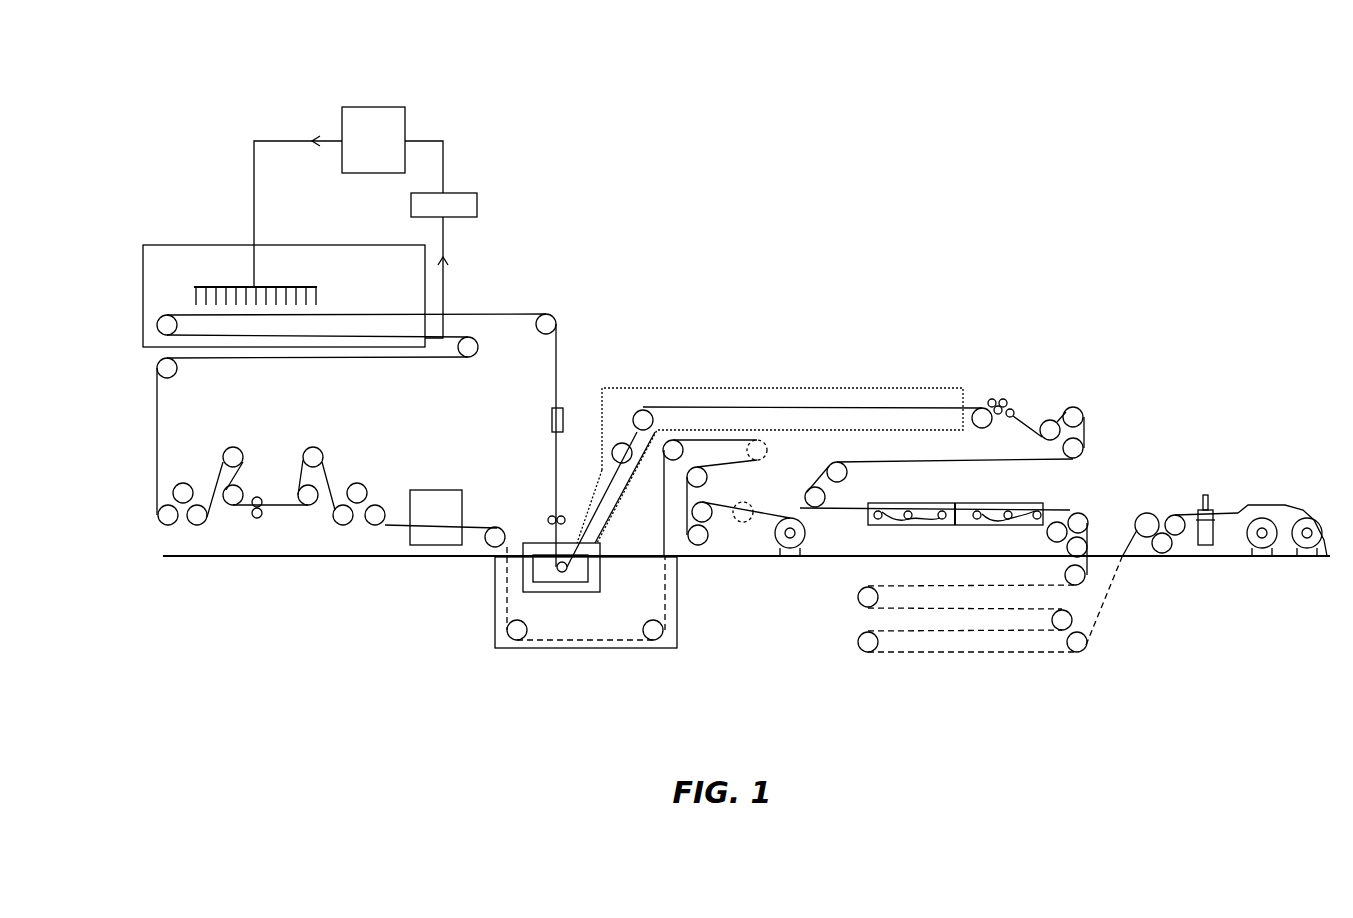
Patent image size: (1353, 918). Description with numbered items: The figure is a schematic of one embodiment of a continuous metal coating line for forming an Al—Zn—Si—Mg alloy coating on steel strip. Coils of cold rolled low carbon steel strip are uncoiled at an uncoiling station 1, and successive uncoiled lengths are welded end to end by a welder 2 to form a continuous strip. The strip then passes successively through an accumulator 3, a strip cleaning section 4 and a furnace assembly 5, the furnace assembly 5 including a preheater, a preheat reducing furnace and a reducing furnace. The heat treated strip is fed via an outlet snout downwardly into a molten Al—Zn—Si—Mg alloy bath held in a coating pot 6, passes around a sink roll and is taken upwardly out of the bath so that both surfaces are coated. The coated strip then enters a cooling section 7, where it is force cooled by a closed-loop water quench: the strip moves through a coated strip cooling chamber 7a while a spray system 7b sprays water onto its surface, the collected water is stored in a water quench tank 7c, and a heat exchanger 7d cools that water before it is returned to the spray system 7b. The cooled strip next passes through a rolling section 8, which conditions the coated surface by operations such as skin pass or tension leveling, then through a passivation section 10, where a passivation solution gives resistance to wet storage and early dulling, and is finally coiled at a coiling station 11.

The uncoiling station 1 is at (1288, 567).
The welder 2 is at (1213, 502).
The accumulator 3 is at (963, 657).
The strip cleaning section 4 is at (968, 493).
The furnace assembly 5 is at (890, 375).
The coating pot 6 is at (527, 602).
The cooling section 7 is at (335, 188).
The coated strip cooling chamber 7a is at (352, 299).
The spray system 7b is at (215, 272).
The water quench tank 7c is at (348, 92).
The heat exchanger 7d is at (480, 200).
The rolling section 8 is at (262, 483).
The passivation section 10 is at (440, 477).
The coiling station 11 is at (757, 565).